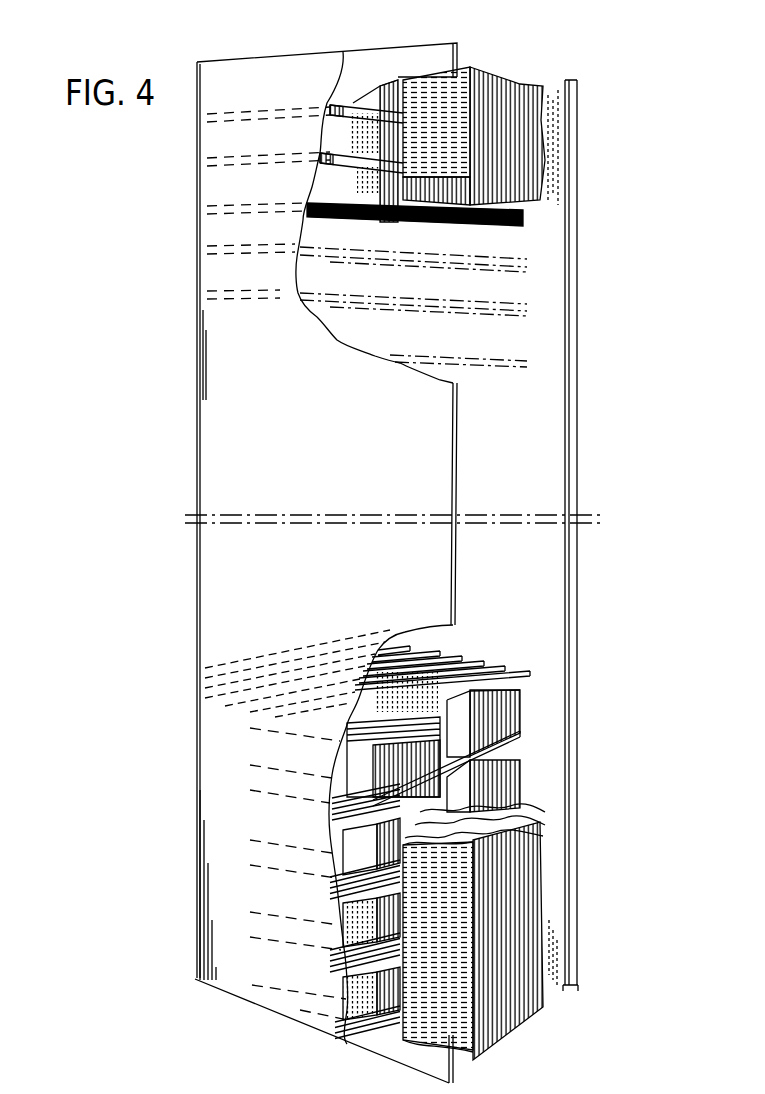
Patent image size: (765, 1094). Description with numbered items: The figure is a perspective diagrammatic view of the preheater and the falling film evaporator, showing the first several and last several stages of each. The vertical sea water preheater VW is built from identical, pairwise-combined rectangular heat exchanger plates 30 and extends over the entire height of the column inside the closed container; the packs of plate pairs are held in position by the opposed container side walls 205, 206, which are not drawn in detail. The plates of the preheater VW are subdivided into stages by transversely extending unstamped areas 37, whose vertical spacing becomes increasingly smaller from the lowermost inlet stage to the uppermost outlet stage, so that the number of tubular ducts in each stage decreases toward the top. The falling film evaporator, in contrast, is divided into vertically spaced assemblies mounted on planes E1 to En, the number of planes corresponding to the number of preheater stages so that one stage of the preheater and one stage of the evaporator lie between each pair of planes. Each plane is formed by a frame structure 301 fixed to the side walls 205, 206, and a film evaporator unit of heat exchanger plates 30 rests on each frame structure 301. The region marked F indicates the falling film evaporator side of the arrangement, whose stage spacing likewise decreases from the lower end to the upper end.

The container side wall 205 is at (230, 595).
The container side wall 206 is at (555, 610).
The frame structure 301 is at (500, 232).
The heat exchanger plates 30 is at (343, 52).
The unstamped areas 37 is at (463, 155).
The preheater VW is at (520, 160).
The first plane E1 is at (352, 132).
The n-th plane En is at (368, 1033).
The surface region F is at (516, 456).